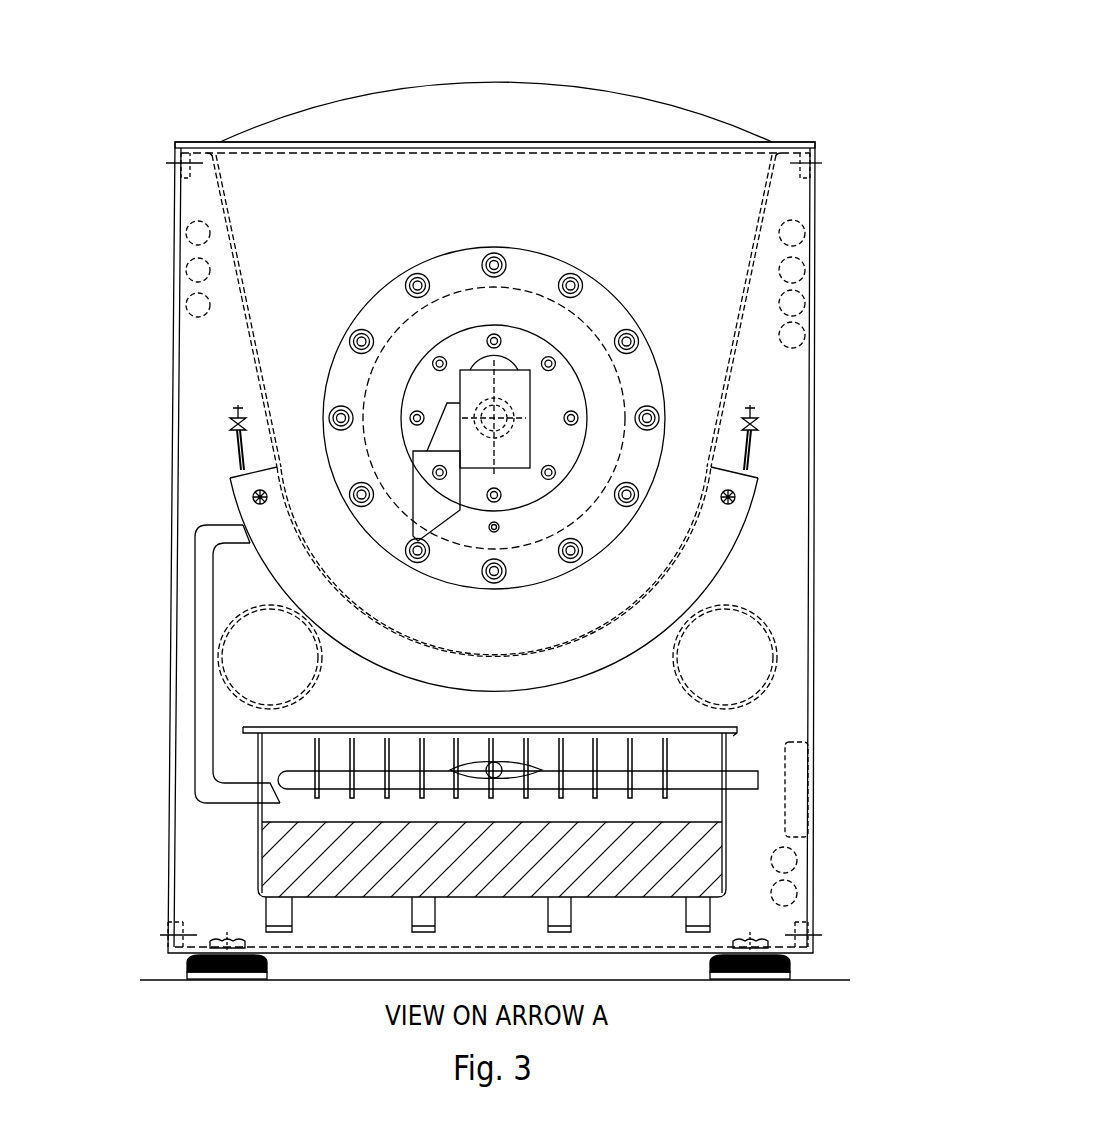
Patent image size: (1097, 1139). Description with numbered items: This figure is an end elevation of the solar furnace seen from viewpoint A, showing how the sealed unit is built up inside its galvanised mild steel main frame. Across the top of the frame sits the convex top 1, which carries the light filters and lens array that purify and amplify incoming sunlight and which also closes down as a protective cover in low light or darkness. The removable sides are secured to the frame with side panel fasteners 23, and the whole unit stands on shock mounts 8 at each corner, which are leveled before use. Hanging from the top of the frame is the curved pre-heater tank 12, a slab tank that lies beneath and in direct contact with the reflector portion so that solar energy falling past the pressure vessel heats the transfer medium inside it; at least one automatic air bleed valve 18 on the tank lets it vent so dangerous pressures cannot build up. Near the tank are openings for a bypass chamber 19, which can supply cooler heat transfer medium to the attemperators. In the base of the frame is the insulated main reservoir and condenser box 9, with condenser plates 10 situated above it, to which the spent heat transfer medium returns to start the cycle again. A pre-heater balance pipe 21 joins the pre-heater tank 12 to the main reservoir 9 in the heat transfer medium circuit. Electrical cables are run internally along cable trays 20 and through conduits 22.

The convex top 1 is at (598, 107).
The shock mounts 8 is at (795, 966).
The main reservoir/condenser box 9 is at (262, 849).
The condenser plates 10 is at (745, 775).
The pre-heater tank 12 is at (688, 567).
The automatic air bleed valve 18 is at (235, 450).
The bypass chamber 19 is at (258, 657).
The cable trays 20 is at (797, 772).
The pre-heater balance pipe 21 is at (204, 582).
The conduits 22 is at (190, 300).
The side panel fasteners 23 is at (818, 159).